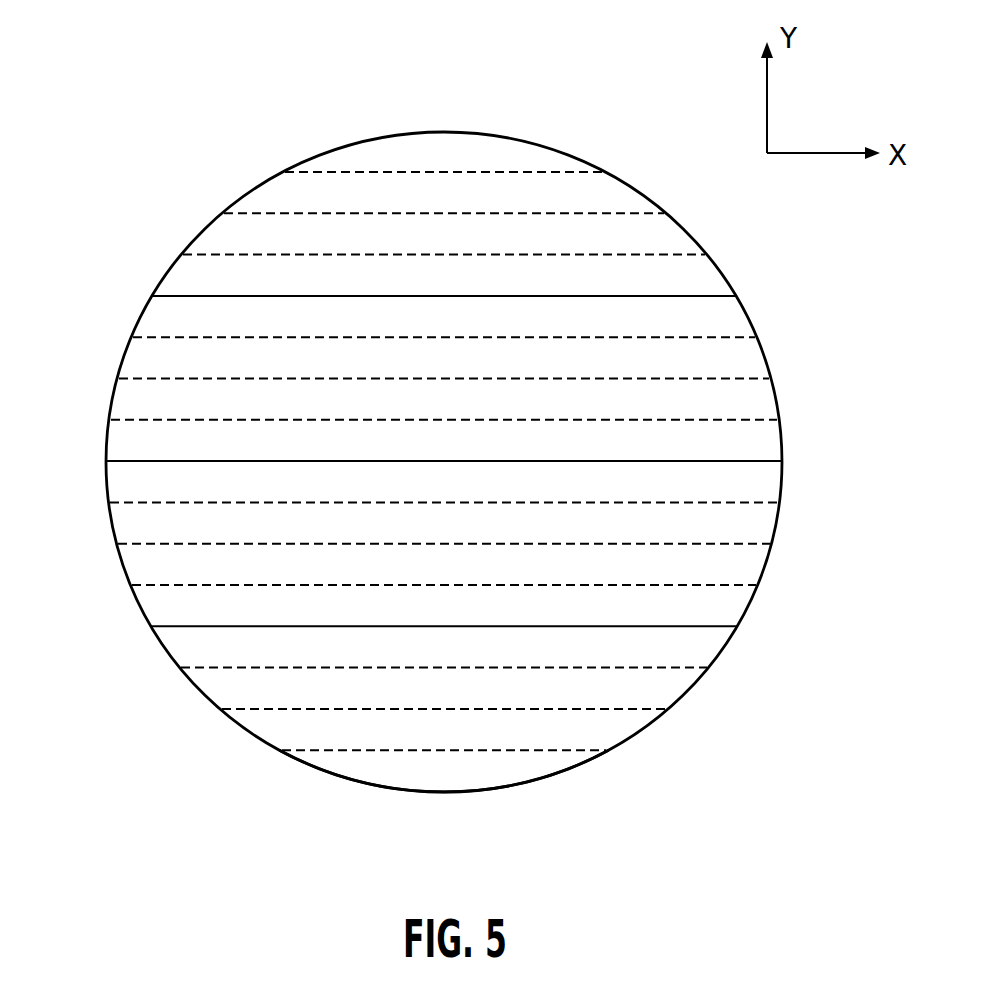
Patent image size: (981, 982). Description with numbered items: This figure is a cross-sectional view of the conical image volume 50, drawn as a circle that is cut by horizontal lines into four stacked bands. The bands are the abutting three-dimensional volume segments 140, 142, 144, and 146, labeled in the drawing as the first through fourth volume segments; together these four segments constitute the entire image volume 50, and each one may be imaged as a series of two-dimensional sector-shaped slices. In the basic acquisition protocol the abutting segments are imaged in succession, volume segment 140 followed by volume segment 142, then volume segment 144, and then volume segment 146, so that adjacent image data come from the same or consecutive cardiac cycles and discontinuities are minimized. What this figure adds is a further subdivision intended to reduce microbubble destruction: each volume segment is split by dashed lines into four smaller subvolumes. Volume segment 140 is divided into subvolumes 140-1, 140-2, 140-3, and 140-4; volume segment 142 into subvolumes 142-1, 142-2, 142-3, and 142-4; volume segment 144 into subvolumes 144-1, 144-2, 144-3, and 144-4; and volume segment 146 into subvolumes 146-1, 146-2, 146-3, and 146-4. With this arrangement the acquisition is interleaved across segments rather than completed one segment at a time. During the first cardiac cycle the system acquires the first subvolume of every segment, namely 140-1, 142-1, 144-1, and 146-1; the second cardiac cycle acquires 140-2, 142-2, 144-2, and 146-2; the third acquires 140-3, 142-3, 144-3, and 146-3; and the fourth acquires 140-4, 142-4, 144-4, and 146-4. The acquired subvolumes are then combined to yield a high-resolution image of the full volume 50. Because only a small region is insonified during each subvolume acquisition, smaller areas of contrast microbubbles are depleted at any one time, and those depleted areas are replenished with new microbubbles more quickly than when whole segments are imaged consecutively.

The conical image volume 50 is at (135, 124).
The volume segment 140 is at (538, 140).
The first sub-section of VS1 140-1 is at (563, 164).
The second sub-section of VS1 140-2 is at (615, 198).
The third sub-section of VS1 140-3 is at (670, 242).
The fourth sub-section of VS1 140-4 is at (693, 279).
The volume segment 142 is at (775, 383).
The first sub-section of VS2 142-1 is at (158, 316).
The second sub-section of VS2 142-2 is at (135, 354).
The third sub-section of VS2 142-3 is at (120, 401).
The fourth sub-section of VS2 142-4 is at (117, 437).
The volume segment 144 is at (113, 537).
The first sub-section of VS3 144-1 is at (765, 484).
The second sub-section of VS3 144-2 is at (762, 526).
The third sub-section of VS3 144-3 is at (750, 566).
The fourth sub-section of VS3 144-4 is at (735, 610).
The volume segment 146 is at (663, 712).
The first sub-section of VS4 146-1 is at (180, 645).
The second sub-section of VS4 146-2 is at (222, 685).
The third sub-section of VS4 146-3 is at (268, 730).
The fourth sub-section of VS4 146-4 is at (317, 760).